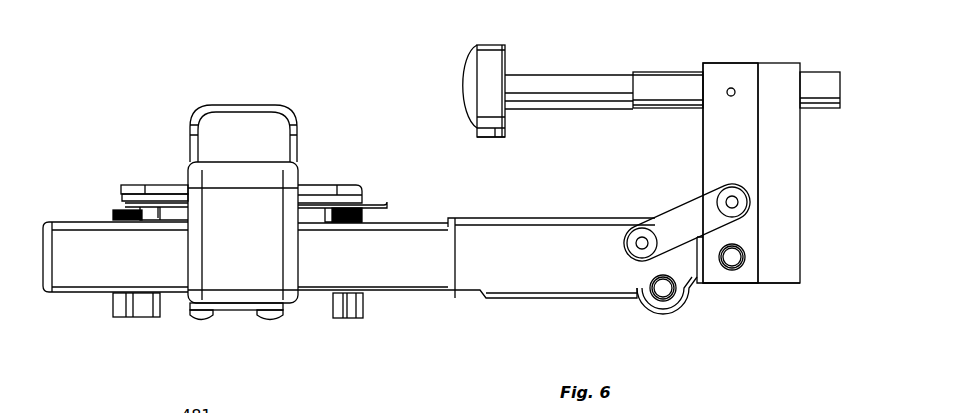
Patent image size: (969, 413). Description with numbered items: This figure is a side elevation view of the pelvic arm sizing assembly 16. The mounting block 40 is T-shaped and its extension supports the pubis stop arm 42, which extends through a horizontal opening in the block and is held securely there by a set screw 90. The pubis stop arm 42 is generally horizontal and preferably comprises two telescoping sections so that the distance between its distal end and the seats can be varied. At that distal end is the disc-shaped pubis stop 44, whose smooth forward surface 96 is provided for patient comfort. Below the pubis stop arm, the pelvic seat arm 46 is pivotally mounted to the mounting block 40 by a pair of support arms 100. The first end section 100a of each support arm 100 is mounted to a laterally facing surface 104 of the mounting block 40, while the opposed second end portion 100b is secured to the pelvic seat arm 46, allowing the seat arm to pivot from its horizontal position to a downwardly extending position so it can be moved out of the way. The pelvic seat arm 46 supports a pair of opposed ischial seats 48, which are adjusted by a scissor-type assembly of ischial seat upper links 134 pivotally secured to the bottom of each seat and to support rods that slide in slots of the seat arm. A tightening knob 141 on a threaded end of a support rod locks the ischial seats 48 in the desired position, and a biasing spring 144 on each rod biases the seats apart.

The sizing assembly 16 is at (630, 47).
The mounting block 40 is at (800, 262).
The pubis stop arm 42 is at (582, 72).
The pubis stop 44 is at (493, 137).
The pelvic seat arm 46 is at (430, 302).
The ischial seats 48 is at (249, 249).
The set screw 90 is at (731, 88).
The smooth forward surface 96 is at (462, 88).
The support arms 100 is at (682, 225).
The first end section 100a is at (729, 196).
The second end portion 100b is at (646, 237).
The laterally facing surface 104 is at (720, 120).
The ischial seat upper links 134 is at (320, 186).
The tightening knob 141 is at (117, 318).
The biasing spring 144 is at (378, 204).